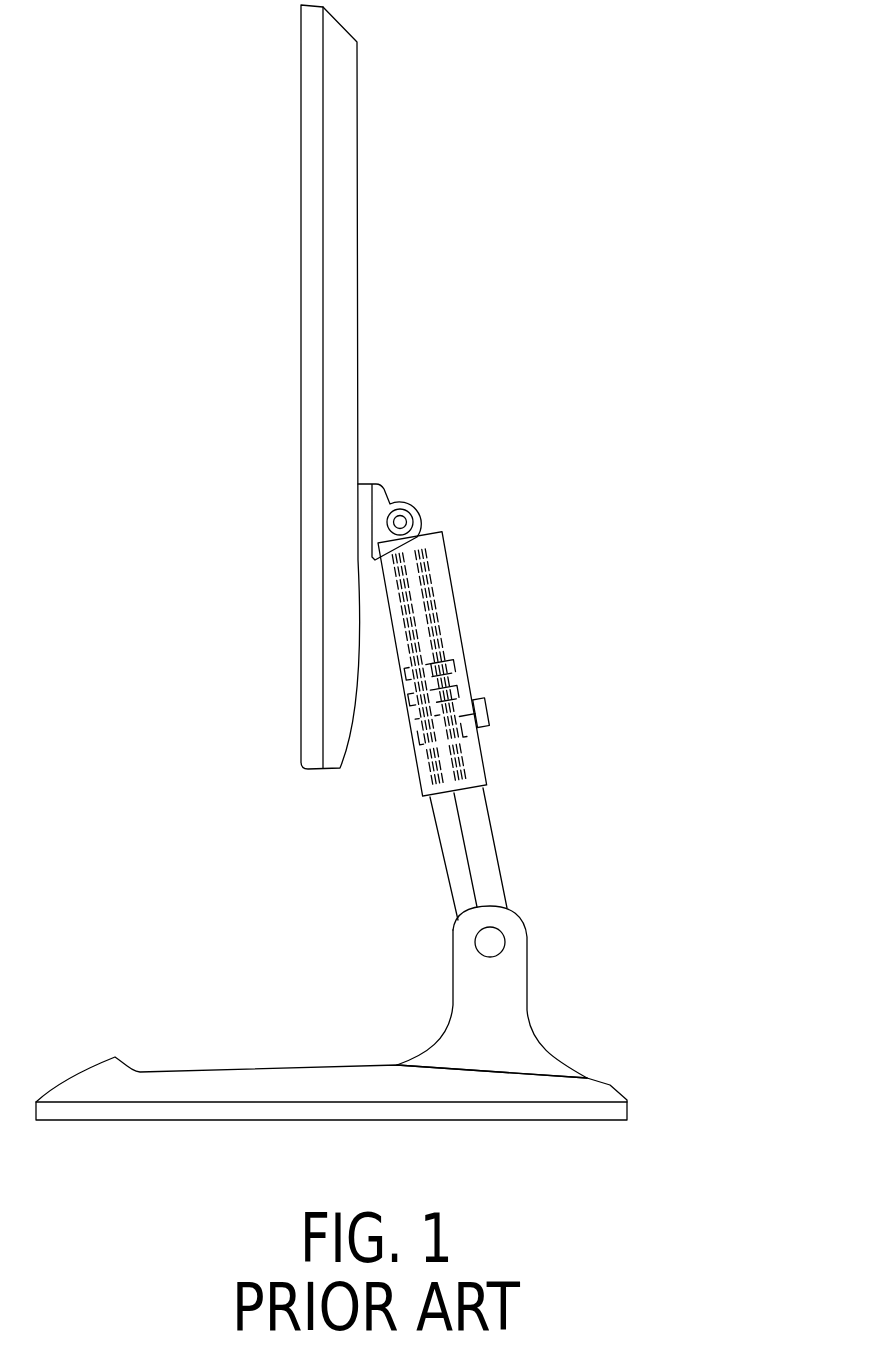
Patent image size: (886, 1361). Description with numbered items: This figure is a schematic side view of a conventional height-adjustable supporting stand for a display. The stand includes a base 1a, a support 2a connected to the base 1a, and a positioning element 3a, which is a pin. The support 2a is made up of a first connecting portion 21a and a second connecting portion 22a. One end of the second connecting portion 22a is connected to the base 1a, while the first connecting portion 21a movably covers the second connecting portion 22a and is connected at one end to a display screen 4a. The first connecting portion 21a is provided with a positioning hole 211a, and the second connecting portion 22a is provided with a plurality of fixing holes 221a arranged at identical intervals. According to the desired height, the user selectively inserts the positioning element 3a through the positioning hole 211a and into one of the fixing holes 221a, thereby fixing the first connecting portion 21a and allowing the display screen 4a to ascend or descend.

The base 1a is at (598, 1068).
The support 2a is at (533, 781).
The first connecting portion 21a is at (450, 598).
The positioning hole 211a is at (474, 689).
The fixing holes 221a is at (428, 778).
The second connecting portion 22a is at (553, 838).
The positioning element 3a is at (499, 709).
The display screen 4a is at (369, 239).